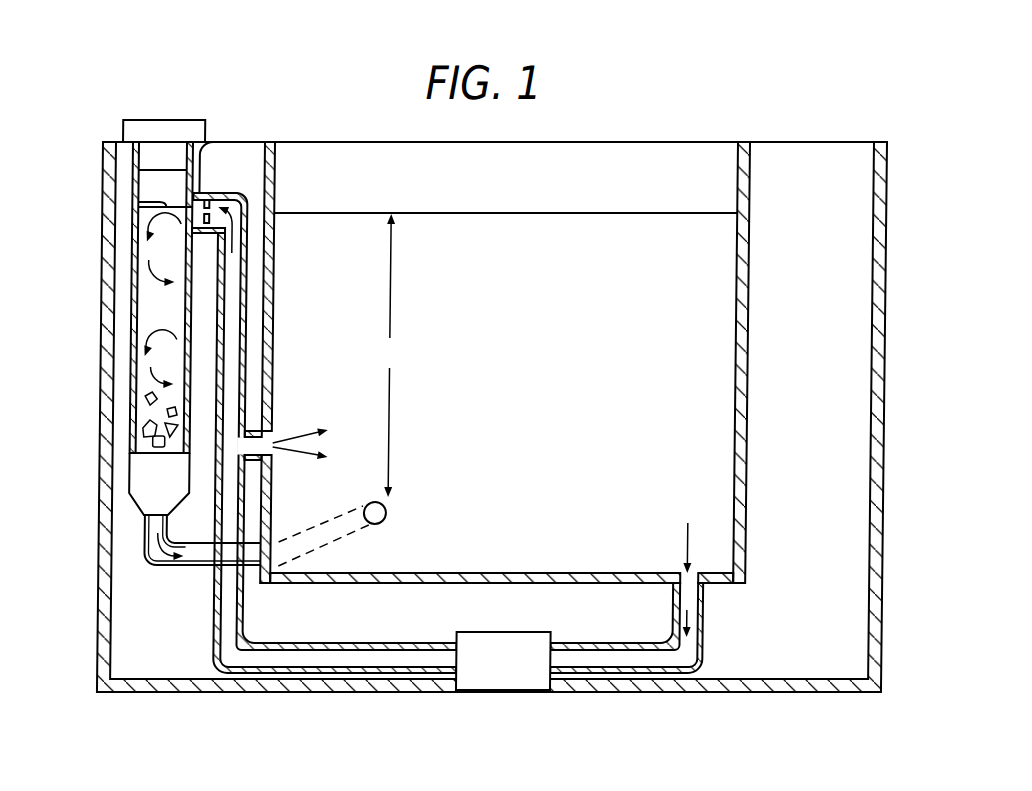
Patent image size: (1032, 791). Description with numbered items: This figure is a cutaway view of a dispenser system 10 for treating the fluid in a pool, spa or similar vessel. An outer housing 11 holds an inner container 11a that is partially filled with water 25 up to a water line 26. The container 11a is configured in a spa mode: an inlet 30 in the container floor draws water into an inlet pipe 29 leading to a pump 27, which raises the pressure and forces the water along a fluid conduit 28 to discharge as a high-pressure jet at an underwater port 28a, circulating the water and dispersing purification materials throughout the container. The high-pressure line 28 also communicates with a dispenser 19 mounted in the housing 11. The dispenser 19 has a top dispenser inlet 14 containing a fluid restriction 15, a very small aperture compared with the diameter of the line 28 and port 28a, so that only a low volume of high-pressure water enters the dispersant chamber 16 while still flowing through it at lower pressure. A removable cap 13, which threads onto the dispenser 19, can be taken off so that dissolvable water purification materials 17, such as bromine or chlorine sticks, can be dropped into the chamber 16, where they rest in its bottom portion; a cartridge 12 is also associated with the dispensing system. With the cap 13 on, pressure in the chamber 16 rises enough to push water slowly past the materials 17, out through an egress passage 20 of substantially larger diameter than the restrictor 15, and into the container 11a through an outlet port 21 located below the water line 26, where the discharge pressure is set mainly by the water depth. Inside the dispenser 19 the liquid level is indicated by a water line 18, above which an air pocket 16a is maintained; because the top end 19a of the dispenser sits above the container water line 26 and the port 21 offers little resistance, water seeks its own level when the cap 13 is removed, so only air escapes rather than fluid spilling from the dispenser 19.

The dispenser system 10 is at (766, 123).
The outer housing 11 is at (886, 141).
The inner container 11a is at (751, 313).
The cartridge 12 is at (134, 195).
The cap 13 is at (155, 120).
The dispenser inlet 14 is at (266, 142).
The fluid restriction 15 is at (228, 193).
The dispersant chamber 16 is at (179, 321).
The air pocket 16a is at (152, 182).
The water purification materials 17 is at (150, 432).
The water line 18 is at (150, 203).
The dispenser 19 is at (125, 144).
The top end 19a is at (201, 193).
The egress passage 20 is at (165, 570).
The outlet port 21 is at (389, 521).
The water 25 is at (531, 386).
The water line 26 is at (499, 212).
The pump 27 is at (560, 632).
The fluid conduit 28 is at (363, 641).
The underwater port 28a is at (280, 437).
The inlet pipe 29 is at (710, 663).
The inlet 30 is at (689, 565).